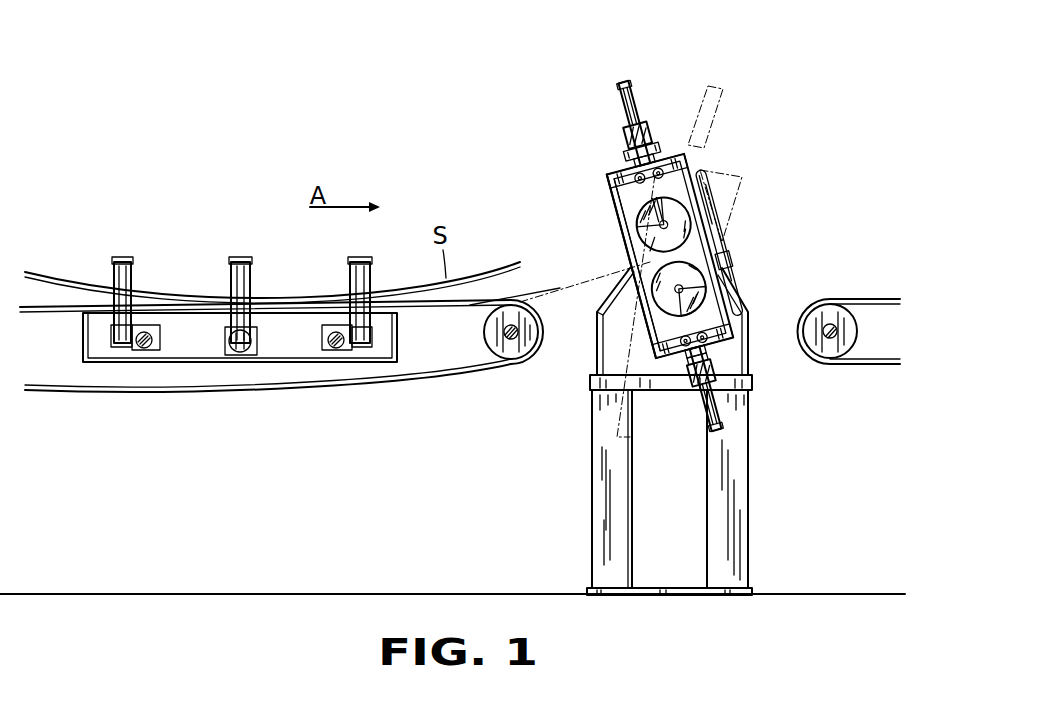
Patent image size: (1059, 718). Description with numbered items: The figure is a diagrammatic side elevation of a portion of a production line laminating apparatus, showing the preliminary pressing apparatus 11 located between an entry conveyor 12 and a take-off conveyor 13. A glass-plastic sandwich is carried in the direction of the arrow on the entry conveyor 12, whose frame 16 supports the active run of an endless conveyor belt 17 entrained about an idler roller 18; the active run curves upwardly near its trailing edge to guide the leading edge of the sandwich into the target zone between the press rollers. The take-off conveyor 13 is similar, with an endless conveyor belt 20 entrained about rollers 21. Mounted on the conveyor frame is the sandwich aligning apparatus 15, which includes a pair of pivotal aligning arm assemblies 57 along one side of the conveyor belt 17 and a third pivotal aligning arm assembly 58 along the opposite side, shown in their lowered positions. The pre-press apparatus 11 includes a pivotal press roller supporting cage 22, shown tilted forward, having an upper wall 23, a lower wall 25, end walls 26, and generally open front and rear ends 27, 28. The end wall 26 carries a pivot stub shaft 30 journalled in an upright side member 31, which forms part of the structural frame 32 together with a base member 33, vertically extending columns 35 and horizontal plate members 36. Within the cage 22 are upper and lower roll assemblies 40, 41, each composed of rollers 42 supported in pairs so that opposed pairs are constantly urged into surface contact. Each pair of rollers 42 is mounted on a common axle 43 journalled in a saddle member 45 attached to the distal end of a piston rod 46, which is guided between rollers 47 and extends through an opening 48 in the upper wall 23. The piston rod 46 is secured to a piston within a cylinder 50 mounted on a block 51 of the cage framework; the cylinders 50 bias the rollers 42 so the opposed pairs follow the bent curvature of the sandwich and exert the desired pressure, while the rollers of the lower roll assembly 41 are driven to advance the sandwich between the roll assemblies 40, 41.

The preliminary pressing apparatus 11 is at (786, 110).
The entry conveyor 12 is at (412, 400).
The take-off conveyor 13 is at (853, 372).
The sandwich aligning apparatus 15 is at (232, 233).
The frame 16 is at (200, 363).
The conveyor belt 17 is at (465, 310).
The idler roller 18 is at (520, 352).
The conveyor belt 20 is at (884, 300).
The rollers 21 is at (835, 318).
The cage 22 is at (700, 152).
The upper wall 23 is at (672, 163).
The lower wall 25 is at (722, 350).
The end walls 26 is at (612, 190).
The front end 27 is at (609, 206).
The rear end 28 is at (702, 184).
The pivot stub shafts 30 is at (722, 239).
The upright side members 31 is at (600, 298).
The structural frame 32 is at (755, 462).
The base member 33 is at (655, 588).
The columns 35 is at (600, 490).
The horizontal plate members 36 is at (597, 384).
The upper roll assembly 40 is at (702, 216).
The lower roll assembly 41 is at (724, 262).
The rollers 42 is at (640, 280).
The common axle 43 is at (640, 240).
The saddle member 45 is at (648, 222).
The piston rod 46 is at (635, 165).
The rollers 47 is at (632, 172).
The opening 48 is at (652, 152).
The cylinder 50 is at (630, 92).
The block 51 is at (628, 135).
The pivotal aligning arm assemblies 57 is at (115, 270).
The pivotal aligning arm assembly 58 is at (225, 270).